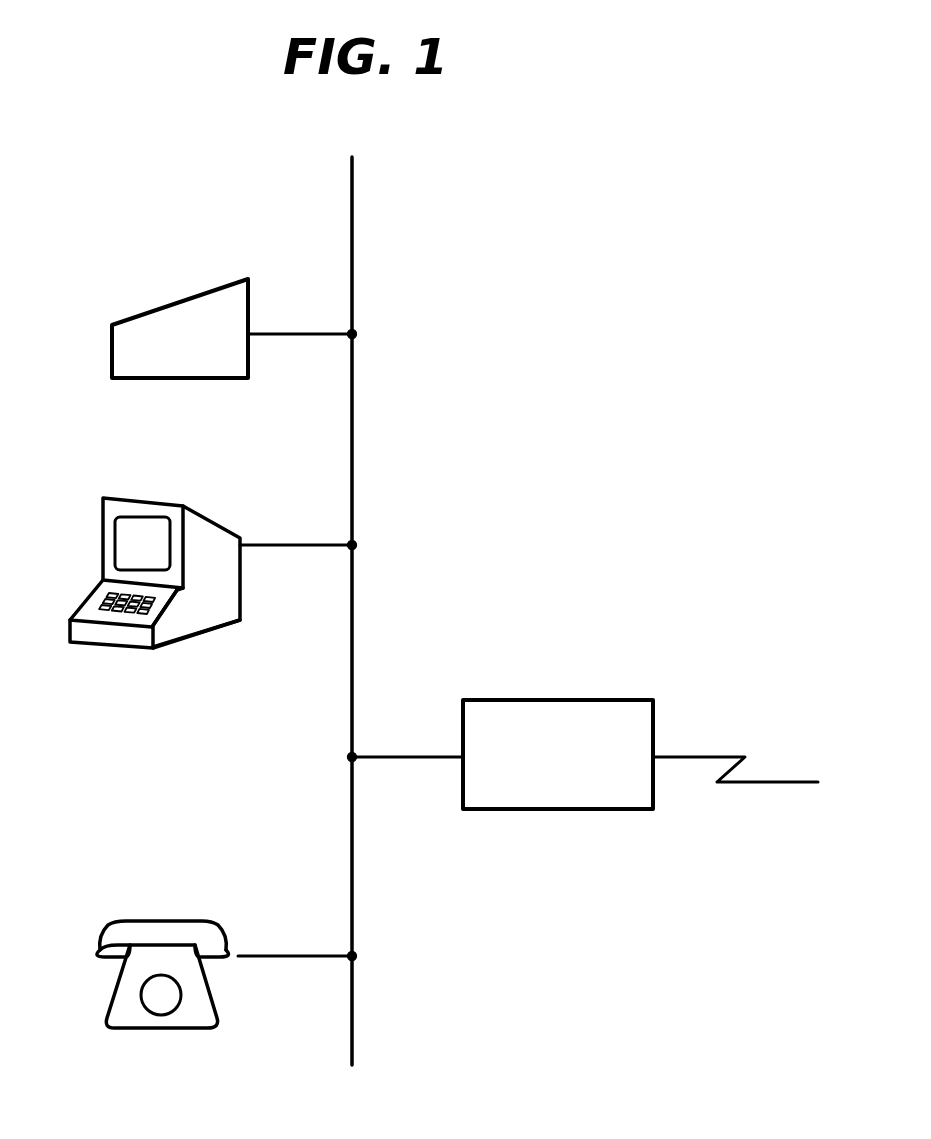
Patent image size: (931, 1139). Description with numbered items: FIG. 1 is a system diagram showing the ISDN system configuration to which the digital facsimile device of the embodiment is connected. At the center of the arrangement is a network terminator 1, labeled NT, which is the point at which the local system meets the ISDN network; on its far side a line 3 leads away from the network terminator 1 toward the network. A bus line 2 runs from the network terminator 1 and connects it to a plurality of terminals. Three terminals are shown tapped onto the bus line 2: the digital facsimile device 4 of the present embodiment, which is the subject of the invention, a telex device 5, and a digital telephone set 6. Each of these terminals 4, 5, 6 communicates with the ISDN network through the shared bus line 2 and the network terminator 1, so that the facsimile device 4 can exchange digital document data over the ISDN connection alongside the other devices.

The network terminator 1 is at (607, 699).
The bus line 2 is at (353, 248).
The external line 3 is at (773, 782).
The digital facsimile device 4 is at (112, 350).
The telex device 5 is at (103, 550).
The digital telephone set 6 is at (95, 935).